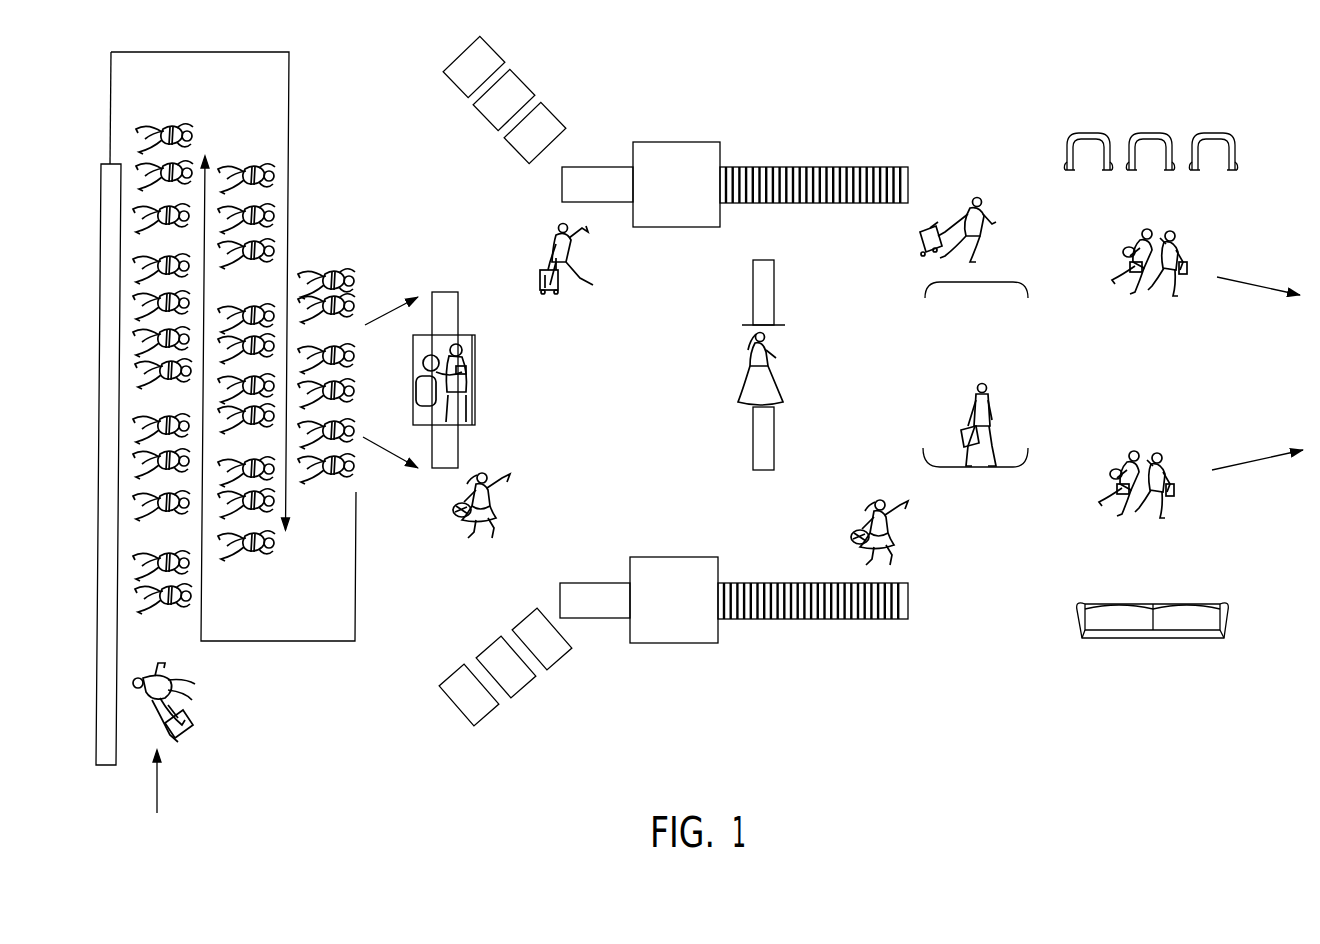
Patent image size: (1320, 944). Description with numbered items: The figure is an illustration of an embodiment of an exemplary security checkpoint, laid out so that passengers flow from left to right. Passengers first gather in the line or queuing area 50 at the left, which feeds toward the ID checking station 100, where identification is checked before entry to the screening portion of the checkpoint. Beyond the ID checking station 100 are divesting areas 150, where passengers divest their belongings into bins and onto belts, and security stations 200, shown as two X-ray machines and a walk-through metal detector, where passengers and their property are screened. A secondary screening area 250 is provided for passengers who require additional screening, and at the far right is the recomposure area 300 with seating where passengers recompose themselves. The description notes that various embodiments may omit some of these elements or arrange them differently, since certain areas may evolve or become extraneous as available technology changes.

The line or queuing area 50 is at (195, 695).
The ID checking station 100 is at (477, 397).
The divesting areas 150 is at (450, 85).
The security stations 200 is at (677, 228).
The secondary screening area 250 is at (962, 377).
The recomposure area 300 is at (1167, 370).